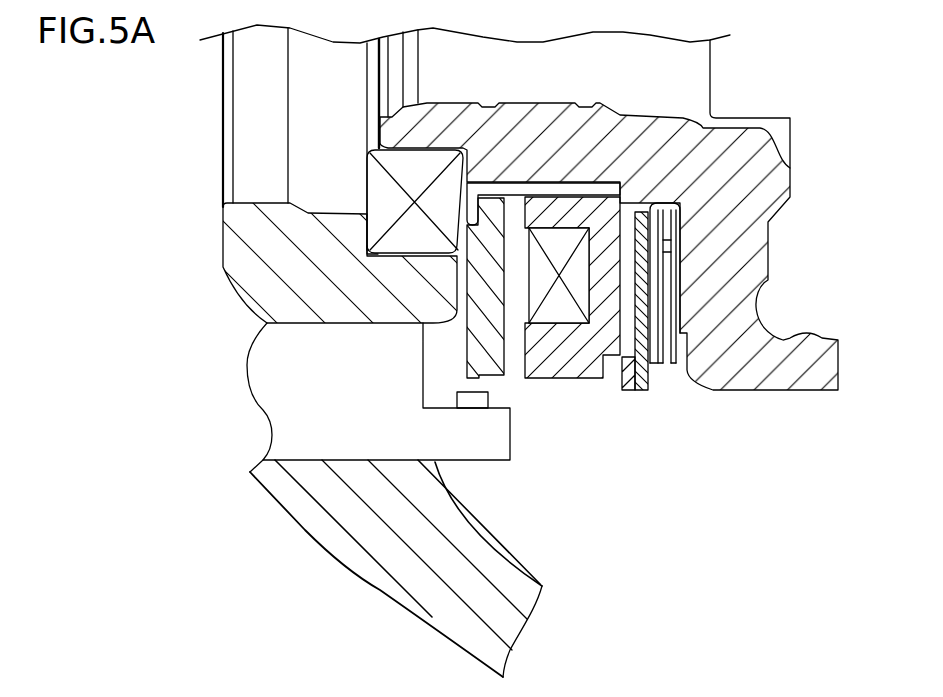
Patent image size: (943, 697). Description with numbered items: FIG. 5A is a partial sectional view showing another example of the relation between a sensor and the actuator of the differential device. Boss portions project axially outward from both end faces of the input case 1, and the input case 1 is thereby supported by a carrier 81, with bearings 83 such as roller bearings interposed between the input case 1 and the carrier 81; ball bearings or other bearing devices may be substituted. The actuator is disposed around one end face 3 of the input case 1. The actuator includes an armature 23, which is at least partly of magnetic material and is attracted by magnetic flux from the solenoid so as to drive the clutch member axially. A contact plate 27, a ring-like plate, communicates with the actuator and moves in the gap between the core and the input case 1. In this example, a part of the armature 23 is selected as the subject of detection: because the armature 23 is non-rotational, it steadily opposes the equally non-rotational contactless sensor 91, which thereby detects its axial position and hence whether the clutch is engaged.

The input case 1 is at (747, 393).
The end face 3 is at (678, 373).
The armature 23 is at (507, 372).
The contact plate 27 is at (640, 393).
The carrier 81 is at (283, 508).
The bearing 83 is at (367, 190).
The contactless sensor 91 is at (488, 400).